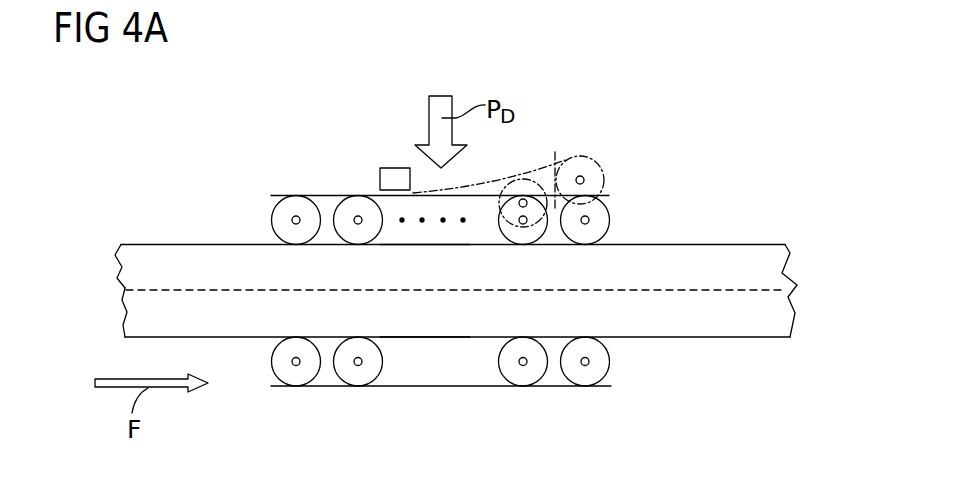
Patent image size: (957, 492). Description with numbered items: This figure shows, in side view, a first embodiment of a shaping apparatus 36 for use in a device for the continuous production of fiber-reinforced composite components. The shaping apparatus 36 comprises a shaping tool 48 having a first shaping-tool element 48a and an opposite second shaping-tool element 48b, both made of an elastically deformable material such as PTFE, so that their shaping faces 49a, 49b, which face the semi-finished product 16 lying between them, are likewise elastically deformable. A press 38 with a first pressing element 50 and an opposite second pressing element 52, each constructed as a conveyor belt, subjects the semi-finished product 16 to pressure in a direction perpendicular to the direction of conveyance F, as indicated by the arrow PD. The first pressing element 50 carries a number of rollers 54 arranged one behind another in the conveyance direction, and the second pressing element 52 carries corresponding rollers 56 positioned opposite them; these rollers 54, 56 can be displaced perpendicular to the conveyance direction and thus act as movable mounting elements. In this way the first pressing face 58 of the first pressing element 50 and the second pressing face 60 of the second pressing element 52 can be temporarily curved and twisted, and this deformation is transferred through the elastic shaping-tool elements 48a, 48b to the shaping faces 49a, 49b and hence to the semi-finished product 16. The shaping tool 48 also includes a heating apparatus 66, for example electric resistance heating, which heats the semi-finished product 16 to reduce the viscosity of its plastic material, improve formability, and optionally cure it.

The semi-finished product 16 is at (194, 288).
The shaping apparatus 36 is at (601, 82).
The press 38 is at (720, 119).
The shaping tool 48 is at (812, 288).
The first shaping-tool element 48a is at (735, 325).
The second shaping-tool element 48b is at (735, 256).
The shaping face 49a is at (220, 288).
The shaping face 49b is at (167, 288).
The first pressing element 50 is at (432, 375).
The second pressing element 52 is at (326, 176).
The rollers 54 is at (357, 372).
The rollers 56 is at (293, 198).
The first pressing face 58 is at (462, 337).
The second pressing face 60 is at (462, 246).
The heating apparatus 66 is at (393, 168).